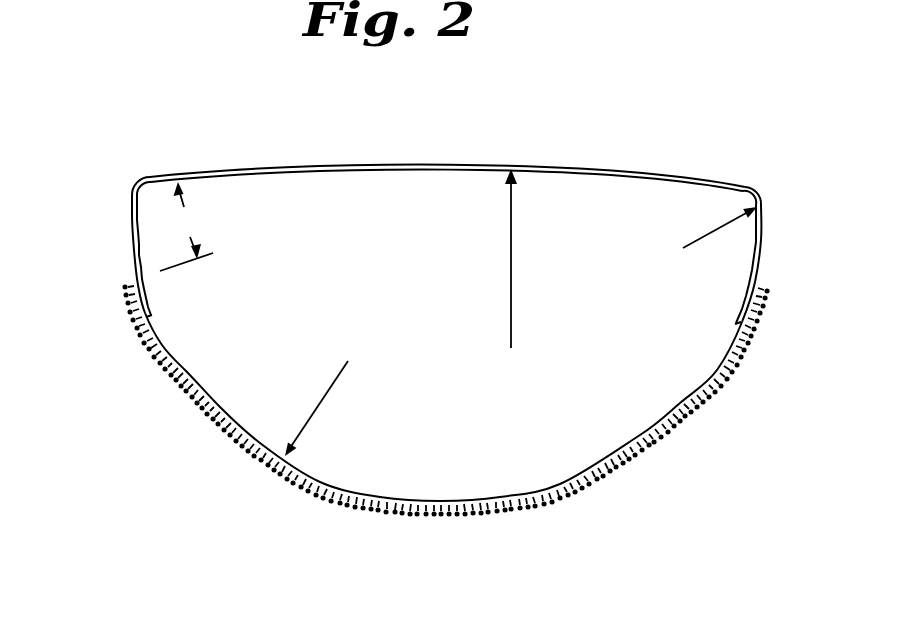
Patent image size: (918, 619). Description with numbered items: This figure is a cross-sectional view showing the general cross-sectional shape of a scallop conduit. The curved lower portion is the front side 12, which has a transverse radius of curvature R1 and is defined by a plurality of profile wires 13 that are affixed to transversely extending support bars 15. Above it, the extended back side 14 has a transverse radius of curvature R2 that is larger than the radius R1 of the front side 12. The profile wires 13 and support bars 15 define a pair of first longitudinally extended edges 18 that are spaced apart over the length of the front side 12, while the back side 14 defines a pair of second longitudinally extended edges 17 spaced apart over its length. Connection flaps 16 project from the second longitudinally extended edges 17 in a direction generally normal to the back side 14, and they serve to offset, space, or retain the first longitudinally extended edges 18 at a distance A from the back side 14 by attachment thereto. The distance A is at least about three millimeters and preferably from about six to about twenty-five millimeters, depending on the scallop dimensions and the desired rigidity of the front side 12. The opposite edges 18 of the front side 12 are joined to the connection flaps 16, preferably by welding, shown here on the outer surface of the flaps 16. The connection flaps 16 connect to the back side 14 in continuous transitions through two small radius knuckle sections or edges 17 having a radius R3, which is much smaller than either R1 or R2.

The front side 12 is at (238, 473).
The profile wires 13 is at (335, 504).
The back side 14 is at (328, 170).
The support bars 15 is at (544, 485).
The connection flaps 16 is at (132, 240).
The second longitudinally extended edges 17 is at (138, 182).
The first longitudinally extended edges 18 is at (136, 289).
The distance A is at (186, 226).
The transverse radius of curvature of the front side R1 is at (331, 408).
The transverse radius of curvature of the back side R2 is at (527, 258).
The knuckle radius R3 is at (706, 248).